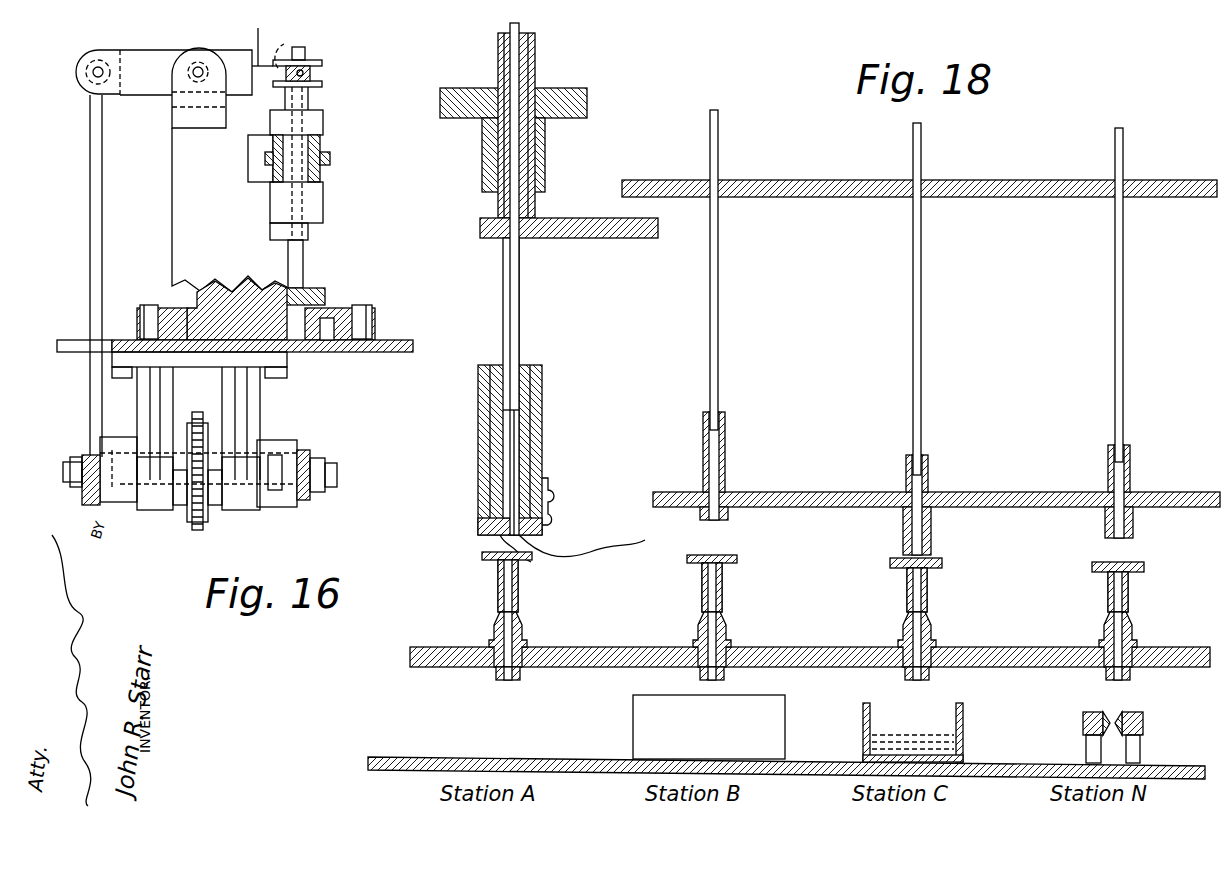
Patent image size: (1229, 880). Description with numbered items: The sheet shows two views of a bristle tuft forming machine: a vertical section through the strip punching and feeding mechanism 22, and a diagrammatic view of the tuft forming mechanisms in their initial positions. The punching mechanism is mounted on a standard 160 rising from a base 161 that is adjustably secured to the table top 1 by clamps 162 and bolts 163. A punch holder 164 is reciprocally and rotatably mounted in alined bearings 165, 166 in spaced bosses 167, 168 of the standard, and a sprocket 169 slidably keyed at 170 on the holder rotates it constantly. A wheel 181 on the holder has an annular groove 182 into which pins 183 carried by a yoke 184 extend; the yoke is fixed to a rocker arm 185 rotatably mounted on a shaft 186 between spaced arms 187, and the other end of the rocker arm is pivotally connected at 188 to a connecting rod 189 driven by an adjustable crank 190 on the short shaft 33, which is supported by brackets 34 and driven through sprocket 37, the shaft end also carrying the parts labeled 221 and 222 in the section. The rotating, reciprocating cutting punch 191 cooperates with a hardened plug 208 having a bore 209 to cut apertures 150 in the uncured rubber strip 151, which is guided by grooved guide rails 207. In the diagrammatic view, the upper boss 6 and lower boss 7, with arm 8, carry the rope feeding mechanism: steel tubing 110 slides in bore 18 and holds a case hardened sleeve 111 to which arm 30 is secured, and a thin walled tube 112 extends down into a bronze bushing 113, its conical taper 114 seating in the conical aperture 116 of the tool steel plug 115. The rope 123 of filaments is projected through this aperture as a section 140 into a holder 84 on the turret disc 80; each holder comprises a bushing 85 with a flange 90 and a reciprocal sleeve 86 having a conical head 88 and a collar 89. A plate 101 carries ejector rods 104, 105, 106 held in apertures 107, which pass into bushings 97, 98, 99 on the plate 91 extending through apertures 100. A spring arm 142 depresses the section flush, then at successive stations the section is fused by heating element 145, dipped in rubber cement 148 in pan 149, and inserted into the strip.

In FIG. 16, the table top 1 is at (414, 346).
In FIG. 18, the upper boss 6 is at (482, 168).
In FIG. 18, the lower boss 7 is at (543, 452).
In FIG. 18, the arm 8 is at (588, 92).
In FIG. 18, the bore 18 is at (536, 152).
In FIG. 16, the mechanism for cutting apertures and feeding strip 22 is at (170, 229).
In FIG. 18, the arm 30 is at (581, 218).
In FIG. 16, the short shaft 33 is at (272, 456).
In FIG. 16, the brackets 34 is at (252, 414).
In FIG. 16, the sprocket 37 is at (197, 412).
In FIG. 18, the turret disc 80 is at (811, 647).
In FIG. 18, the holder 84 is at (524, 627).
In FIG. 18, the bushing 85 is at (695, 635).
In FIG. 18, the reciprocal sleeve 86 is at (498, 600).
In FIG. 18, the conical head 88 is at (903, 680).
In FIG. 18, the collar 89 is at (738, 558).
In FIG. 18, the flange 90 is at (1140, 652).
In FIG. 18, the plate 91 is at (825, 492).
In FIG. 18, the bushing 97 is at (726, 450).
In FIG. 18, the bushing 98 is at (928, 472).
In FIG. 18, the bushing 99 is at (1131, 468).
In FIG. 18, the apertures 100 is at (702, 492).
In FIG. 18, the plate 101 is at (828, 185).
In FIG. 18, the ejector rod 104 is at (719, 352).
In FIG. 18, the ejector rod 105 is at (922, 362).
In FIG. 18, the ejector rod 106 is at (1124, 368).
In FIG. 18, the apertures 107 is at (702, 184).
In FIG. 18, the steel tubing 110 is at (536, 68).
In FIG. 18, the sleeve 111 is at (500, 73).
In FIG. 18, the thin walled tube 112 is at (520, 336).
In FIG. 18, the bronze bushing 113 is at (490, 438).
In FIG. 18, the conical taper 114 is at (508, 402).
In FIG. 18, the tool steel plug 115 is at (544, 553).
In FIG. 18, the conical aperture 116 is at (478, 528).
In FIG. 18, the rope 123 is at (521, 28).
In FIG. 18, the section 140 is at (503, 500).
In FIG. 18, the spring arm 142 is at (600, 549).
In FIG. 18, the heating element 145 is at (709, 727).
In FIG. 18, the rubber cement 148 is at (912, 735).
In FIG. 18, the pan 149 is at (863, 722).
In FIG. 18, the apertures 150 is at (1108, 715).
In FIG. 16, the endless strip 151 is at (326, 296).
In FIG. 18, the endless strip 151 is at (1143, 720).
In FIG. 16, the standard 160 is at (229, 210).
In FIG. 16, the base 161 is at (206, 285).
In FIG. 16, the clamps 162 is at (140, 325).
In FIG. 16, the bolts 163 is at (148, 308).
In FIG. 16, the punch holder 164 is at (270, 236).
In FIG. 16, the bearing 165 is at (324, 128).
In FIG. 16, the bearing 166 is at (309, 222).
In FIG. 16, the boss 167 is at (324, 112).
In FIG. 16, the boss 168 is at (324, 190).
In FIG. 16, the sprocket 169 is at (331, 158).
In FIG. 16, the key 170 is at (248, 153).
In FIG. 16, the wheel 181 is at (306, 62).
In FIG. 16, the annular groove 182 is at (323, 73).
In FIG. 16, the pins 183 is at (277, 58).
In FIG. 16, the yoke 184 is at (263, 36).
In FIG. 16, the rocker arm 185 is at (152, 52).
In FIG. 16, the shaft 186 is at (200, 66).
In FIG. 16, the arms 187 is at (172, 76).
In FIG. 16, the pivot 188 is at (98, 66).
In FIG. 16, the connecting rod 189 is at (90, 262).
In FIG. 16, the adjustable crank 190 is at (115, 505).
In FIG. 16, the cutting punch 191 is at (306, 258).
In FIG. 16, the guide rails 207 is at (292, 284).
In FIG. 18, the guide rails 207 is at (1083, 726).
In FIG. 16, the hardened plug 208 is at (330, 345).
In FIG. 16, the bore 209 is at (297, 360).
In FIG. 16, the washer 221 is at (312, 454).
In FIG. 16, the nut 222 is at (283, 507).